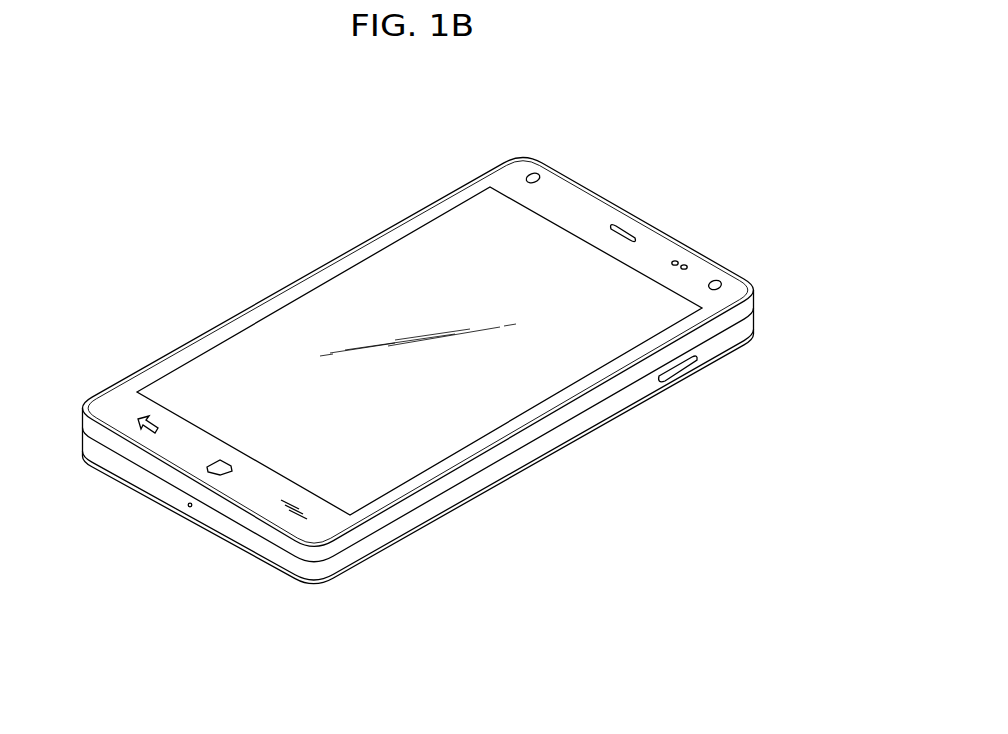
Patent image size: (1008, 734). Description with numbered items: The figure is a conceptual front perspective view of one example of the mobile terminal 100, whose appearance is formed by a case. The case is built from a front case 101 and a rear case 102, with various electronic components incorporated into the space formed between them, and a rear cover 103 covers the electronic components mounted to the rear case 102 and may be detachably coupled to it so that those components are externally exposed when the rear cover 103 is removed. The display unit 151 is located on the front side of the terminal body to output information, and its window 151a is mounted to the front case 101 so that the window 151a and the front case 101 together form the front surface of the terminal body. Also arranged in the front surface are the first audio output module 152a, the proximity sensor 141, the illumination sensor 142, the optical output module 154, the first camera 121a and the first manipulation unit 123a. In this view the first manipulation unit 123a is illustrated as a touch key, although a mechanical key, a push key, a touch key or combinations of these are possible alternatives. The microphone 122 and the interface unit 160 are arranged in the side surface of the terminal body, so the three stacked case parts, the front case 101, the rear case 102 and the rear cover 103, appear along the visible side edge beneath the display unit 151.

The mobile terminal 100 is at (298, 210).
The front case 101 is at (750, 308).
The rear case 102 is at (750, 320).
The rear cover 103 is at (745, 338).
The first camera 121a is at (721, 283).
The microphone 122 is at (188, 508).
The first manipulation unit 123a is at (282, 510).
The proximity sensor 141 is at (686, 264).
The illumination sensor 142 is at (676, 260).
The display unit 151 is at (287, 335).
The window 151a is at (450, 245).
The first audio output module 152a is at (619, 228).
The optical output module 154 is at (542, 177).
The interface unit 160 is at (679, 368).